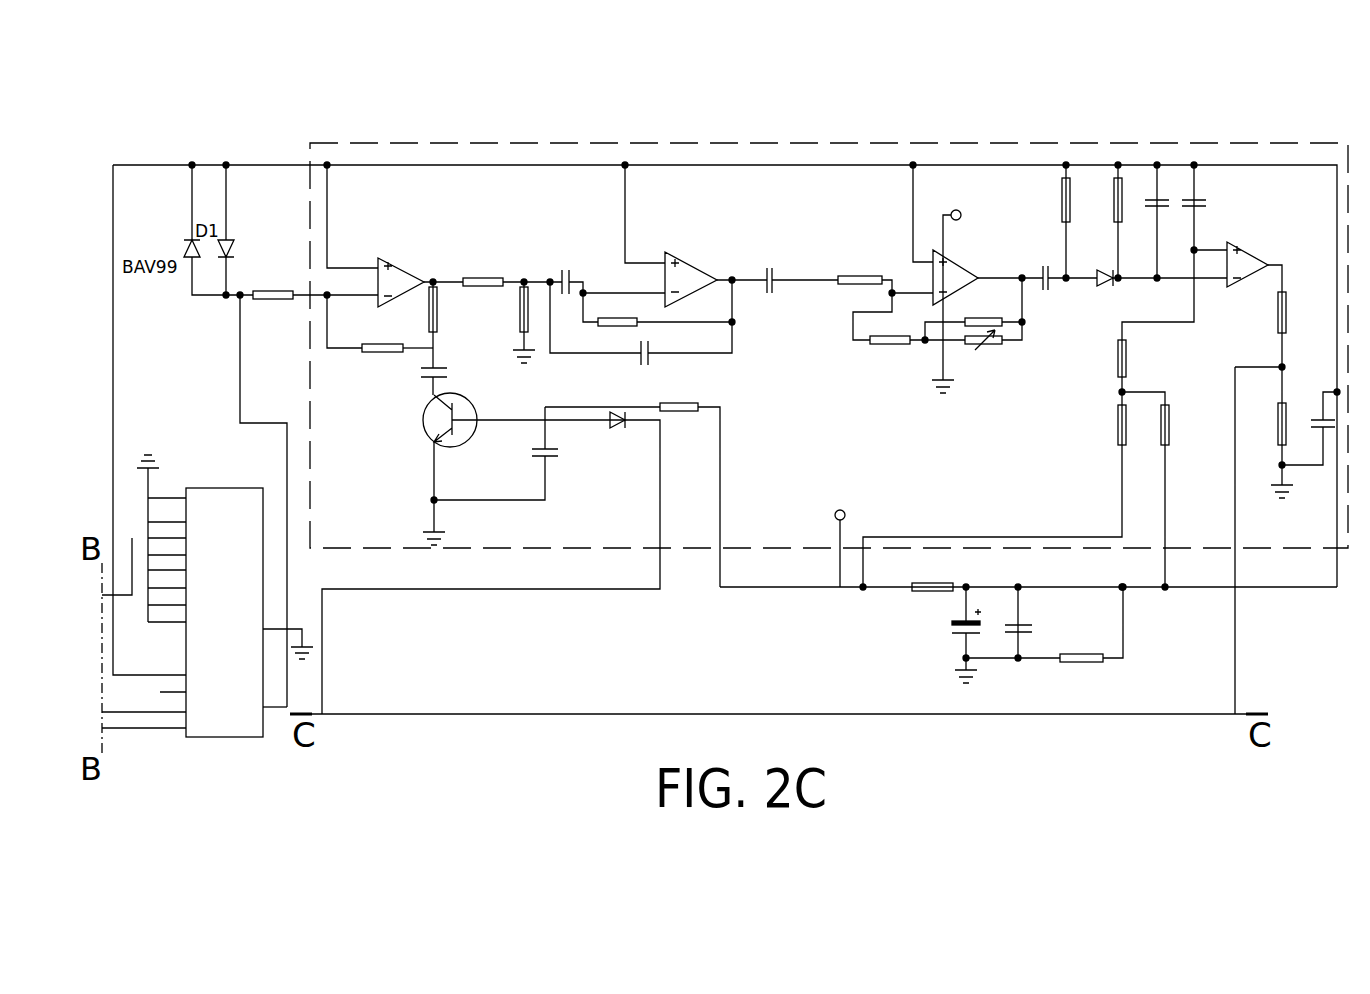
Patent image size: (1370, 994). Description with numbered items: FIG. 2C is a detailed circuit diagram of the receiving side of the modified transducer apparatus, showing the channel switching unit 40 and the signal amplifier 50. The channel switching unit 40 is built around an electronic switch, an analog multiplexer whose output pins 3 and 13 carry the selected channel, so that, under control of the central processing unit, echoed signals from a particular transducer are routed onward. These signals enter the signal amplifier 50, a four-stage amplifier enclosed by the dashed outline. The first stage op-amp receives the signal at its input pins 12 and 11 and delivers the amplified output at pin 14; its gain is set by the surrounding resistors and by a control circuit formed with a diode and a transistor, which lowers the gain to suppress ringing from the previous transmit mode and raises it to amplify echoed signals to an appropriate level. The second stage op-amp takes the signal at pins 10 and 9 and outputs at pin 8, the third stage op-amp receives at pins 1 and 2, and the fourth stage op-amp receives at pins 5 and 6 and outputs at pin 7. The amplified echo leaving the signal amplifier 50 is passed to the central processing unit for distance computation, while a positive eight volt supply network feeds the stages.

The channel switching unit 40 is at (207, 580).
The signal amplifier 50 is at (750, 143).
The IC2A pin 1 (non-inverting input) 1 is at (923, 214).
The IC2A pin 2 (inverting input) 2 is at (912, 303).
The IC1 pin 3 (Y output) 3 is at (288, 634).
The IC2B pin 5 (non-inverting input) 5 is at (1210, 242).
The IC2B pin 6 (inverting input) 6 is at (1170, 271).
The IC2B pin 7 (output) 7 is at (1275, 269).
The IC2C pin 8 (output) 8 is at (742, 269).
The IC2C pin 9 (inverting input) 9 is at (624, 284).
The IC2C pin 10 (non-inverting input) 10 is at (645, 214).
The IC2D pin 11 (inverting input) 11 is at (335, 321).
The IC2D pin 12 (non-inverting input) 12 is at (352, 217).
The IC1 pin 13 (X output) 13 is at (275, 697).
The IC2D pin 14 (output) 14 is at (435, 269).